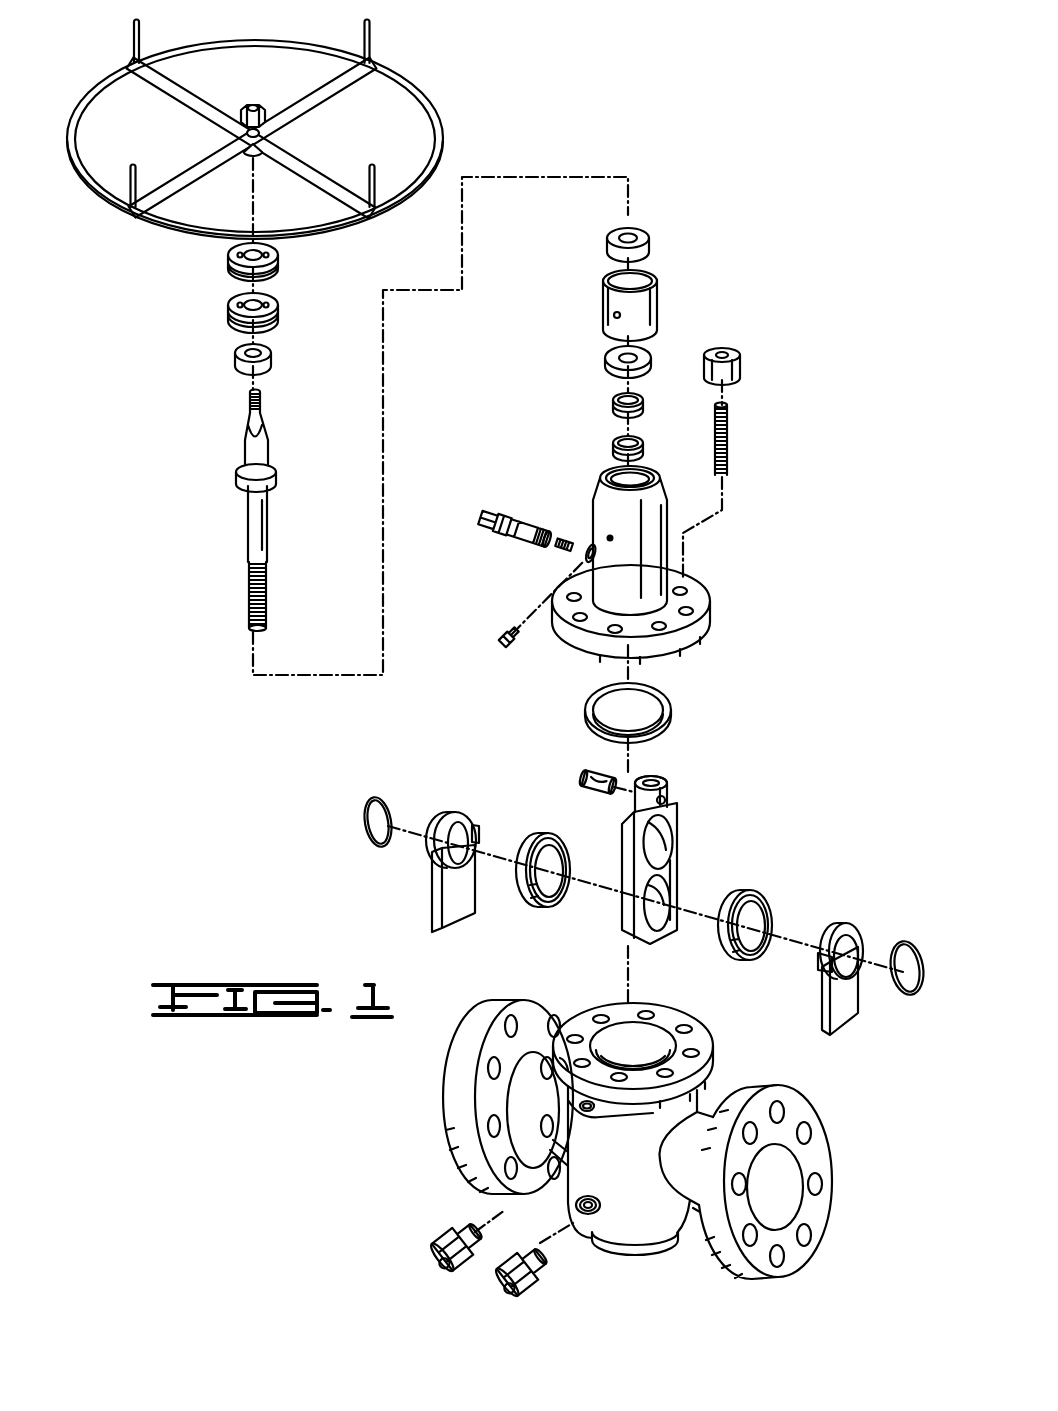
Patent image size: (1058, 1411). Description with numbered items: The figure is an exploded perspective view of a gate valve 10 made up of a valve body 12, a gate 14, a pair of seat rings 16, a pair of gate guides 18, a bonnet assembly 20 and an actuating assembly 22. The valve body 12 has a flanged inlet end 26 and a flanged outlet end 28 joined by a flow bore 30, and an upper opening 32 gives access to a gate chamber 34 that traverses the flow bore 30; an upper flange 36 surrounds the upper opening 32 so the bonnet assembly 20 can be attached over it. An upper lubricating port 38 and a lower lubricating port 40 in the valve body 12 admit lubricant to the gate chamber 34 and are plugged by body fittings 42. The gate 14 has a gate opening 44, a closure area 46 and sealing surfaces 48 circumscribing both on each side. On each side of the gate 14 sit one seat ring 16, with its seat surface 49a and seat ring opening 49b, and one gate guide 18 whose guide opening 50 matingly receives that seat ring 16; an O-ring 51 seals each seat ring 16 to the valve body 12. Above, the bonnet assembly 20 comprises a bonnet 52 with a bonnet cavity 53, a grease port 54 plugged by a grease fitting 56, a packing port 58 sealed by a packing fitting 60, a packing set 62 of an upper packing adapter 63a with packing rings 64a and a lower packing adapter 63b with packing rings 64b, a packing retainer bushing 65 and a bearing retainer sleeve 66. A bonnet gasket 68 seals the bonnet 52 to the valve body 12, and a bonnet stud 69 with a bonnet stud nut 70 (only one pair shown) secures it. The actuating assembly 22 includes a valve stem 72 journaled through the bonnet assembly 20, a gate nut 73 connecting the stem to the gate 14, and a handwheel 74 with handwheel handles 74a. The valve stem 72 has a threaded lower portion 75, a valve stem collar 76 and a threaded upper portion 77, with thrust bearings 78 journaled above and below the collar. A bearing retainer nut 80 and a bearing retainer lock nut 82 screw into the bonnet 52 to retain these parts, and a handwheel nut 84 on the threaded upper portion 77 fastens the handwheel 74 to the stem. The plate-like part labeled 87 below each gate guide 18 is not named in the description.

The gate valve 10 is at (714, 300).
The valve body 12 is at (599, 1131).
The gate 14 is at (686, 845).
The seat rings 16 is at (676, 865).
The gate guides 18 is at (640, 895).
The bonnet assembly 20 is at (590, 490).
The actuating assembly 22 is at (217, 501).
The inlet end 26 is at (447, 1097).
The outlet end 28 is at (792, 1182).
The flow bore 30 is at (779, 1180).
The upper opening 32 is at (608, 1036).
The gate chamber 34 is at (657, 1053).
The upper flange 36 is at (701, 1043).
The upper lubricating port 38 is at (580, 1107).
The lower lubricating port 40 is at (589, 1216).
The body fittings 42 is at (503, 1290).
The gate opening 44 is at (666, 894).
The closure area 46 is at (668, 806).
The sealing surfaces 48 is at (666, 838).
The seat surface 49a is at (538, 906).
The seat ring opening 49b is at (561, 860).
The guide opening 50 is at (480, 828).
The O-ring 51 is at (367, 810).
The bonnet 52 is at (668, 560).
The bonnet cavity 53 is at (643, 544).
The grease port 54 is at (608, 536).
The grease fitting 56 is at (502, 641).
The packing port 58 is at (590, 553).
The packing fitting 60 is at (484, 524).
The packing set 62 is at (619, 428).
The upper packing adapter 63a is at (641, 397).
The lower packing adapter 63b is at (641, 453).
The packing rings 64a is at (642, 407).
The packing rings 64b is at (641, 445).
The packing retainer bushing 65 is at (606, 360).
The bearing retainer sleeve 66 is at (603, 305).
The bonnet gasket 68 is at (670, 702).
The bonnet stud 69 is at (729, 436).
The bonnet stud nut 70 is at (732, 352).
The valve stem 72 is at (247, 530).
The gate nut 73 is at (584, 775).
The handwheel 74 is at (282, 129).
The handwheel handles 74a is at (134, 48).
The threaded lower portion 75 is at (250, 595).
The valve stem collar 76 is at (238, 475).
The threaded upper portion 77 is at (250, 403).
The thrust bearings 78 is at (237, 357).
The bearing retainer nut 80 is at (230, 308).
The bearing retainer lock nut 82 is at (230, 258).
The handwheel nut 84 is at (251, 106).
The retainer plate 87 is at (437, 918).